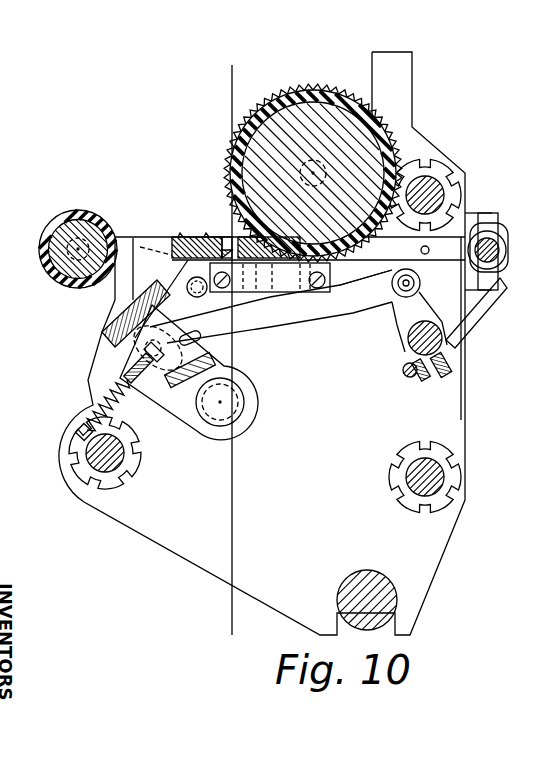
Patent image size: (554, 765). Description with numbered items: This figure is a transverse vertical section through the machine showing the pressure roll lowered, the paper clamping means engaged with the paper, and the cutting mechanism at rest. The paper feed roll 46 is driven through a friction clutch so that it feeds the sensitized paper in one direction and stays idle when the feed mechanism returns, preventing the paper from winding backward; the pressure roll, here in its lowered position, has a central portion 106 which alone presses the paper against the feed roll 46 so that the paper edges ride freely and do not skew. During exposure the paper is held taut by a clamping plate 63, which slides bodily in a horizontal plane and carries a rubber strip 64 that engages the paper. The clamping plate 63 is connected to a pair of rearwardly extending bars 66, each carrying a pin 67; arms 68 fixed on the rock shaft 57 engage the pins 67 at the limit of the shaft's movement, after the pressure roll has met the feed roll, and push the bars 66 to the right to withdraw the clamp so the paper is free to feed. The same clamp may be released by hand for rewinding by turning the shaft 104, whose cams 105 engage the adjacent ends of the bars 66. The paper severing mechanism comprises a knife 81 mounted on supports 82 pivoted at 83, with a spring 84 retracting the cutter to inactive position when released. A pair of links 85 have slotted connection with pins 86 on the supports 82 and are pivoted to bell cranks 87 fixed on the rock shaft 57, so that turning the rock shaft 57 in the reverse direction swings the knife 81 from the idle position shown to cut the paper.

The paper feed roll 46 is at (321, 88).
The rock shaft 57 is at (415, 357).
The clamping plate 63 is at (181, 236).
The rubber strip 64 is at (233, 236).
The rearwardly extending bars 66 is at (358, 274).
The pin 67 is at (420, 250).
The arms 68 is at (480, 307).
The knife 81 is at (128, 316).
The supports 82 is at (180, 378).
The pivot 83 is at (228, 410).
The spring 84 is at (103, 407).
The links 85 is at (300, 318).
The pins 86 is at (157, 347).
The bell cranks 87 is at (403, 318).
The shaft 104 is at (508, 251).
The cams 105 is at (494, 228).
The central portion 106 is at (39, 252).